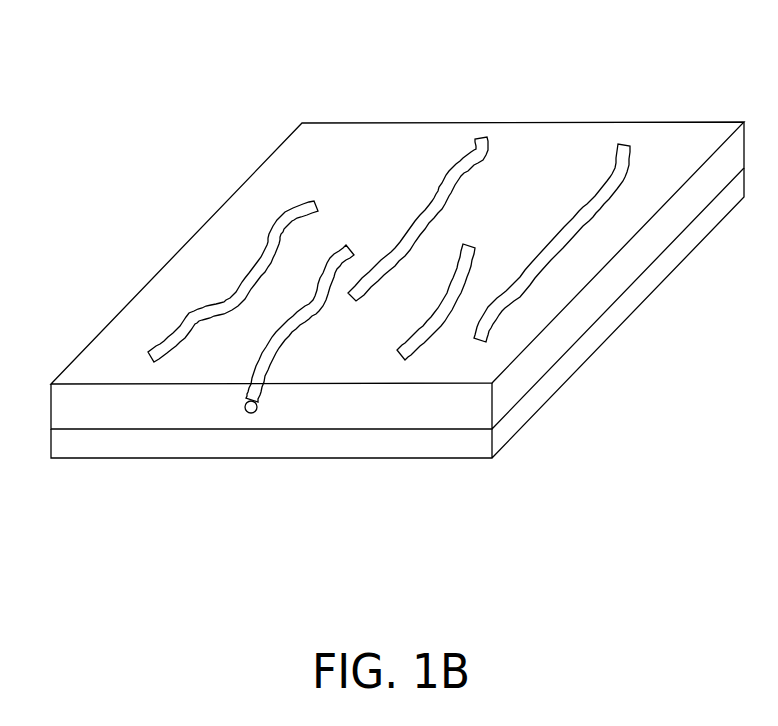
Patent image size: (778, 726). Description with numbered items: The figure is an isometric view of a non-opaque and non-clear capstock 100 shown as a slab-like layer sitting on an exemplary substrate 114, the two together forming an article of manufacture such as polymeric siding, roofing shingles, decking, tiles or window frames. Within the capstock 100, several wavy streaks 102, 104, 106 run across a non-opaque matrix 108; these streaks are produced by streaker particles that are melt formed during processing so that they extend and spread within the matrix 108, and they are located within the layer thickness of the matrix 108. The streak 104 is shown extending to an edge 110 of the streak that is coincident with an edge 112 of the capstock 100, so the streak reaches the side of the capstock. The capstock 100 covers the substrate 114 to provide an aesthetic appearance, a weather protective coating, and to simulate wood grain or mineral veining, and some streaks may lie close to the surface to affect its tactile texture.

The capstock 100 is at (397, 287).
The streak 102 is at (168, 338).
The streak 104 is at (220, 387).
The streak 106 is at (397, 353).
The non-opaque matrix 108 is at (256, 206).
The edge of streak 110 is at (252, 413).
The edge of capstock 112 is at (384, 407).
The substrate 114 is at (472, 445).